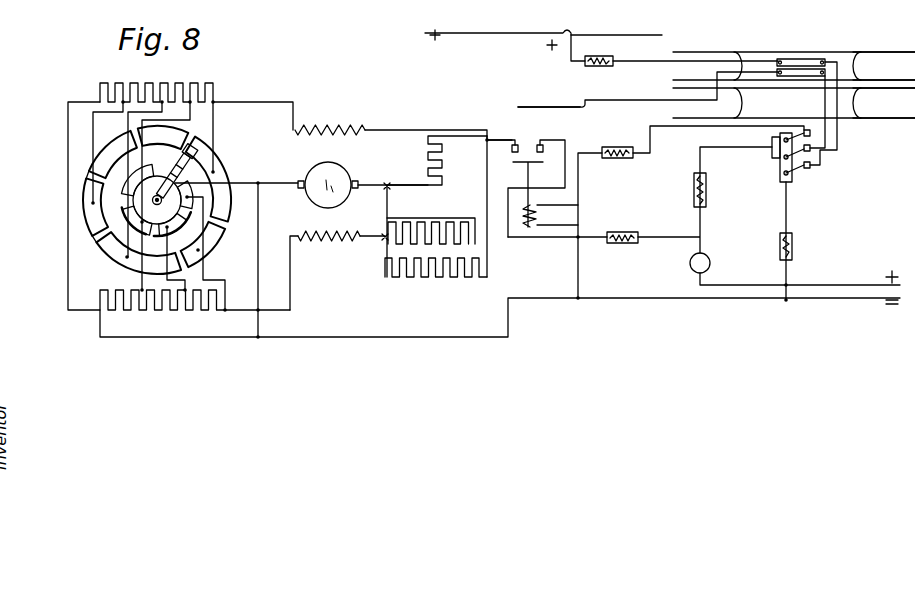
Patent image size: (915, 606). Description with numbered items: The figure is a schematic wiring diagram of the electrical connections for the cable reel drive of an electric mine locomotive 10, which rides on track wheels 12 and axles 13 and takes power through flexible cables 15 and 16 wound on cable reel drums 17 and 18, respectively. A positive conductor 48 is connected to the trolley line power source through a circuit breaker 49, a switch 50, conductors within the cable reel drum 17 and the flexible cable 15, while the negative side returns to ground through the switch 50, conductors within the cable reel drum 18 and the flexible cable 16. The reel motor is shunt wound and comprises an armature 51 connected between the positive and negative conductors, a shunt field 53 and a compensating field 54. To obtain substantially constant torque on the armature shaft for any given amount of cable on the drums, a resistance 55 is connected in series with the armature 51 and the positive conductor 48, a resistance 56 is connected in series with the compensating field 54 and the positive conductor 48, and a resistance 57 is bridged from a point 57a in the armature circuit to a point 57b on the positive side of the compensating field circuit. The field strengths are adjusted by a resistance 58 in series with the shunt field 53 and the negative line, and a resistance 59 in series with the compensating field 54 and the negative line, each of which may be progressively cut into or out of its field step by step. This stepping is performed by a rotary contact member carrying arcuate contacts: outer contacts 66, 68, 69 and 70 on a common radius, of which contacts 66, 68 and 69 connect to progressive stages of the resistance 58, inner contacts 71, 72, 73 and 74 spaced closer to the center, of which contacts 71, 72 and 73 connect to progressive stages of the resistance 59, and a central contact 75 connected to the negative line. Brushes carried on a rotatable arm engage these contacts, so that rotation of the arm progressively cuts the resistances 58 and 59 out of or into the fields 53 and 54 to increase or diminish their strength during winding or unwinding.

The electric mine locomotive 10 is at (436, 7).
The track wheels 12 is at (722, 11).
The axles 13 is at (630, 17).
The flexible cable 15 is at (655, 62).
The flexible cable 16 is at (640, 103).
The cable reel drum 17 is at (905, 52).
The cable reel drum 18 is at (884, 118).
The positive conductor 48 is at (493, 118).
The circuit breaker 49 is at (528, 152).
The switch 50 is at (794, 176).
The armature 51 is at (338, 180).
The shunt field 53 is at (348, 127).
The compensating field 54 is at (352, 238).
The resistance 55 is at (447, 153).
The resistance 56 is at (450, 280).
The resistance 57 is at (442, 218).
The point 57a is at (387, 185).
The point 57b is at (385, 237).
The resistance 58 is at (197, 86).
The resistance 59 is at (174, 312).
The contact 66 is at (224, 160).
The contact 68 is at (130, 271).
The contact 69 is at (92, 227).
The contact 70 is at (97, 141).
The contact 71 is at (233, 200).
The contact 72 is at (214, 246).
The contact 73 is at (108, 243).
The contact 74 is at (100, 192).
The contact 75 is at (156, 187).